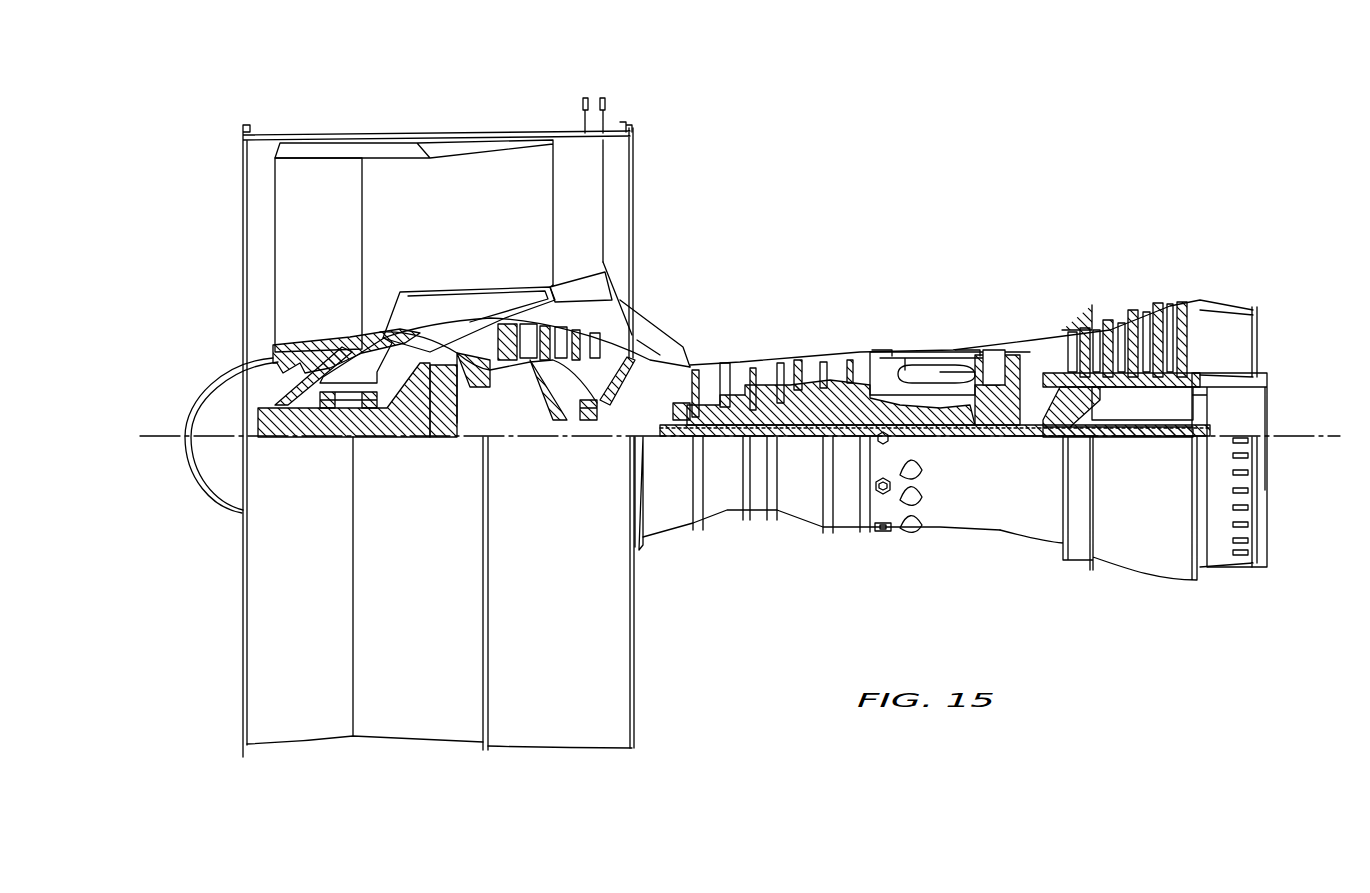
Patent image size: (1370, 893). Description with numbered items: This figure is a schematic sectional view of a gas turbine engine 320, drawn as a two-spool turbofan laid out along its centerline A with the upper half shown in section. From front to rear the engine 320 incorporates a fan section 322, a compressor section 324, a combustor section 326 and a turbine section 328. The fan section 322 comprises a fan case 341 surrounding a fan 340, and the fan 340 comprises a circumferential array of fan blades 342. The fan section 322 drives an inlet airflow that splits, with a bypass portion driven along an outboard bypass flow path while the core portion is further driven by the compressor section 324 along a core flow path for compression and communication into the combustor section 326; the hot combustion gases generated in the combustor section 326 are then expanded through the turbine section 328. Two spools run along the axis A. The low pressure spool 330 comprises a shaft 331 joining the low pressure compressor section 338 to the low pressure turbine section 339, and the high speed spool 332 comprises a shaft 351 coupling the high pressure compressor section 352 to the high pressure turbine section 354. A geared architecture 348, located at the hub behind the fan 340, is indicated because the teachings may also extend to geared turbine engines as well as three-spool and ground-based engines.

The gas turbine engine 320 is at (960, 185).
The fan section 322 is at (348, 127).
The compressor section 324 is at (686, 350).
The combustor section 326 is at (926, 340).
The turbine section 328 is at (1086, 292).
The low pressure spool 330 is at (803, 438).
The shaft 331 is at (658, 432).
The high speed spool 332 is at (846, 397).
The low pressure compressor section 338 is at (558, 339).
The low pressure turbine section 339 is at (1134, 317).
The fan 340 is at (262, 327).
The fan case 341 is at (428, 722).
The fan blades 342 is at (330, 262).
The geared architecture 348 is at (445, 413).
The shaft 351 is at (958, 438).
The high pressure compressor section 352 is at (779, 359).
The high pressure turbine section 354 is at (991, 350).
The engine centerline axis A is at (1338, 432).